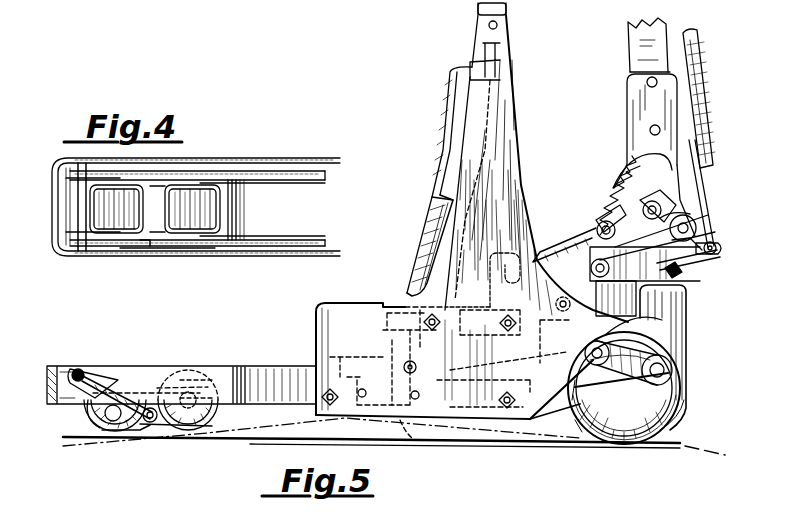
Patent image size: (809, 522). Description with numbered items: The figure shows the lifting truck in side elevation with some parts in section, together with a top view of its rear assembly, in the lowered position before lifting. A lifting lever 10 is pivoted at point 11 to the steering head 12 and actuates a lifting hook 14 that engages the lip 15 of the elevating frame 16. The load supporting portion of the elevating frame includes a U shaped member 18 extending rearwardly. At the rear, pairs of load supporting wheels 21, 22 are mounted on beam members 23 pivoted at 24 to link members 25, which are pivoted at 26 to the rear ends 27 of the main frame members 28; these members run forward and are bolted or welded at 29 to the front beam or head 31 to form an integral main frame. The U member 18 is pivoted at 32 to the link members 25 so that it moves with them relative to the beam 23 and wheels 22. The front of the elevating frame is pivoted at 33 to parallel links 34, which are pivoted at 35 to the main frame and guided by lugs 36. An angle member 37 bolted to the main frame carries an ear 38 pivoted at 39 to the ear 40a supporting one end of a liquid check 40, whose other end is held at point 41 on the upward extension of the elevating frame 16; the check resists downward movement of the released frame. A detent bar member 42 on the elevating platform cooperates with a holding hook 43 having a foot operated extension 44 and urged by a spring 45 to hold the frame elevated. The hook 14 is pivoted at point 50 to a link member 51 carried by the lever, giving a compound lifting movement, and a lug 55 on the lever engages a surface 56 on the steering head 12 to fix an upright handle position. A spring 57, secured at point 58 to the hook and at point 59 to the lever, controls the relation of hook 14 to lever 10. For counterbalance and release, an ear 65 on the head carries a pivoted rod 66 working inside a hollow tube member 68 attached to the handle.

In FIG. 5, the lifting lever 10 is at (632, 93).
In FIG. 5, the pivot point 11 is at (700, 226).
In FIG. 5, the steering head 12 is at (720, 233).
In FIG. 5, the lifting hook 14 is at (562, 253).
In FIG. 5, the lip 15 is at (512, 250).
In FIG. 5, the elevating frame 16 is at (515, 192).
In FIG. 4, the U shaped member 18 is at (56, 209).
In FIG. 5, the U shaped member 18 is at (47, 385).
In FIG. 4, the load supporting wheel 21 is at (108, 246).
In FIG. 5, the load supporting wheel 21 is at (105, 432).
In FIG. 4, the load supporting wheel 22 is at (192, 234).
In FIG. 5, the load supporting wheel 22 is at (198, 432).
In FIG. 5, the beam member 23 is at (168, 432).
In FIG. 4, the pivot 24 is at (180, 248).
In FIG. 5, the pivot 24 is at (152, 424).
In FIG. 4, the link member 25 is at (152, 248).
In FIG. 5, the link member 25 is at (92, 412).
In FIG. 4, the pivot 26 is at (130, 248).
In FIG. 5, the pivot 26 is at (116, 435).
In FIG. 5, the rear end 27 is at (118, 384).
In FIG. 4, the main frame member 28 is at (270, 178).
In FIG. 5, the main frame member 28 is at (690, 405).
In FIG. 5, the bolting or welding point 29 is at (676, 392).
In FIG. 5, the front beam or head 31 is at (690, 320).
In FIG. 4, the pivot 32 is at (72, 231).
In FIG. 5, the pivot 32 is at (78, 369).
In FIG. 5, the pivot 33 is at (570, 405).
In FIG. 5, the parallel link 34 is at (665, 360).
In FIG. 5, the pivot 35 is at (672, 375).
In FIG. 5, the lug 36 is at (655, 340).
In FIG. 5, the angle member 37 is at (410, 420).
In FIG. 5, the ear 38 is at (395, 410).
In FIG. 5, the pivot 39 is at (390, 340).
In FIG. 5, the liquid check 40 is at (418, 245).
In FIG. 5, the ear 40a is at (395, 356).
In FIG. 5, the point 41 is at (482, 27).
In FIG. 5, the detent bar member 42 is at (566, 304).
In FIG. 5, the holding hook 43 is at (591, 268).
In FIG. 5, the foot operated extension 44 is at (725, 264).
In FIG. 5, the spring 45 is at (688, 276).
In FIG. 5, the pivot point 50 is at (598, 220).
In FIG. 5, the link member 51 is at (650, 202).
In FIG. 5, the lug 55 is at (700, 200).
In FIG. 5, the surface 56 is at (696, 222).
In FIG. 5, the spring 57 is at (606, 208).
In FIG. 5, the point 58 is at (597, 232).
In FIG. 5, the point 59 is at (636, 158).
In FIG. 5, the ear 65 is at (720, 250).
In FIG. 5, the rod 66 is at (705, 172).
In FIG. 5, the hollow tube member 68 is at (702, 92).